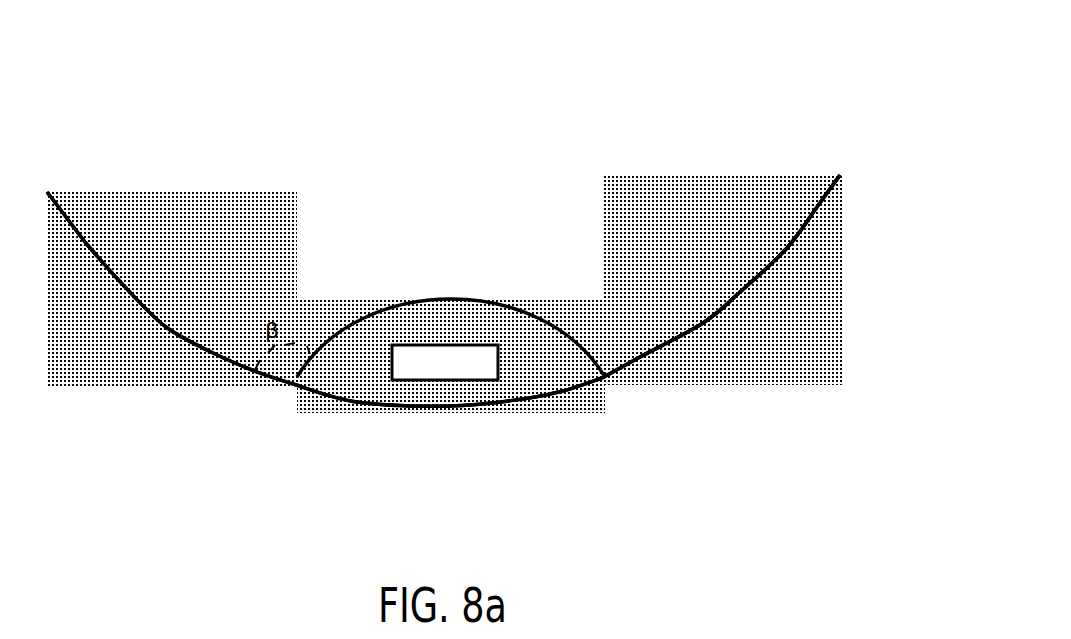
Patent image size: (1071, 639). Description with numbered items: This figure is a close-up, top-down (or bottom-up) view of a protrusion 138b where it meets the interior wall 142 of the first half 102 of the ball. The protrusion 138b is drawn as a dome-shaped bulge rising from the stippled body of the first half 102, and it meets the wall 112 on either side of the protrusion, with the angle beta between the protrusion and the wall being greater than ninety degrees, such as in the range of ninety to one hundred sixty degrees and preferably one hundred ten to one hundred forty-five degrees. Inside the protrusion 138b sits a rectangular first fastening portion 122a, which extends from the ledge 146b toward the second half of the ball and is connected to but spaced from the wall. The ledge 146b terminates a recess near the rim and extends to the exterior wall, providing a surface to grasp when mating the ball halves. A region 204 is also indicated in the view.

The first half of the ball 102 is at (637, 57).
The wall 112 is at (167, 327).
The first fastening portion 122a is at (442, 380).
The protrusion 138b is at (463, 295).
The interior wall 142 is at (86, 242).
The ledge 146b is at (370, 387).
The optical cavity 204 is at (703, 407).